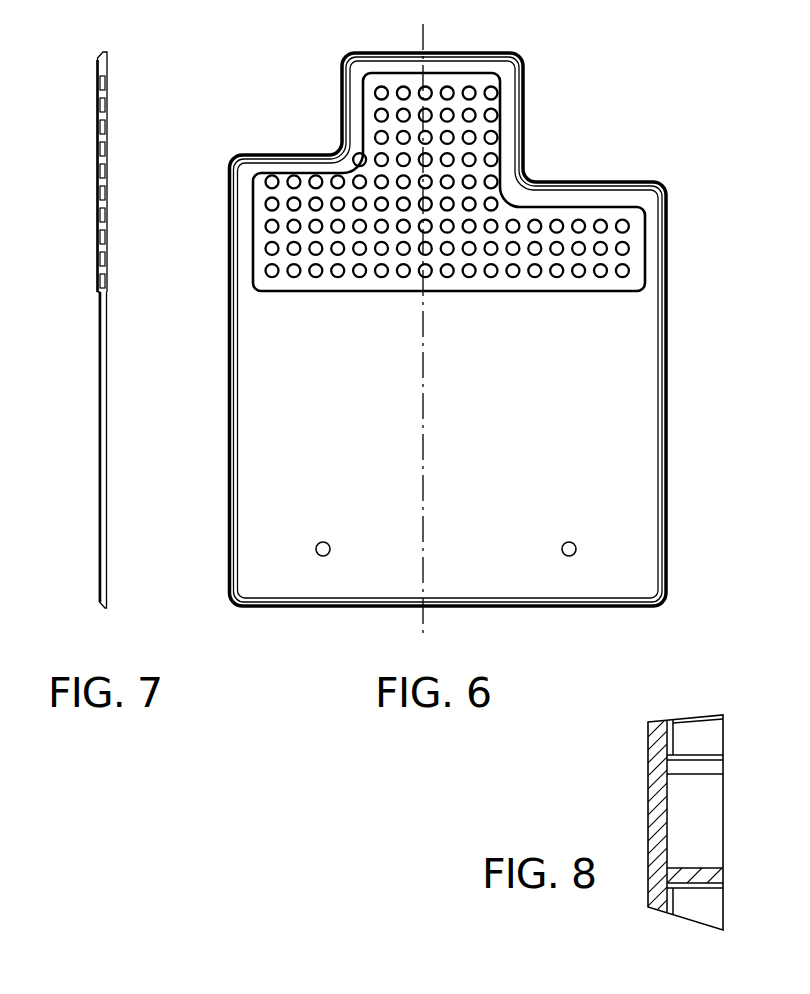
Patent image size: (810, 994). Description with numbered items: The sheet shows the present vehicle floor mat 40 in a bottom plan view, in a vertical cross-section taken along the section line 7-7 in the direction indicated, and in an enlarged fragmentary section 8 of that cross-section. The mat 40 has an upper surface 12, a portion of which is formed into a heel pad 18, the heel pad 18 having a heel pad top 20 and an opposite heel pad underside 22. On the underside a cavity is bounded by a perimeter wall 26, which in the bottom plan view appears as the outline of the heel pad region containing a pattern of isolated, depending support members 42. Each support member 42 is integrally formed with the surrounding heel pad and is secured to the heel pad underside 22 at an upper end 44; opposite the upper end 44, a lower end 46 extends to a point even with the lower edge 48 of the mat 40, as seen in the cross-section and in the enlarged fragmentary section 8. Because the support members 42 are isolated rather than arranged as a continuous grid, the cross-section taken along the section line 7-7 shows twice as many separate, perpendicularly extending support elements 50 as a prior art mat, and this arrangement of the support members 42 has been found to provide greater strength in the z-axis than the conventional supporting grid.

In FIG. 6, the section line 7- 7 is at (423, 24).
In FIG. 7, the enlarged fragmentary section 8 is at (106, 86).
In FIG. 7, the upper surface 12 is at (100, 458).
In FIG. 8, the heel pad 18 is at (648, 768).
In FIG. 8, the heel pad top 20 is at (648, 813).
In FIG. 8, the heel pad underside 22 is at (673, 733).
In FIG. 6, the perimeter wall 26 is at (580, 292).
In FIG. 7, the mat 40 is at (91, 312).
In FIG. 8, the support members 42 is at (702, 888).
In FIG. 8, the upper end 44 is at (665, 873).
In FIG. 8, the lower end 46 is at (722, 873).
In FIG. 6, the lower edge 48 is at (625, 565).
In FIG. 8, the lower edge 48 is at (723, 792).
In FIG. 7, the support elements 50 is at (107, 150).